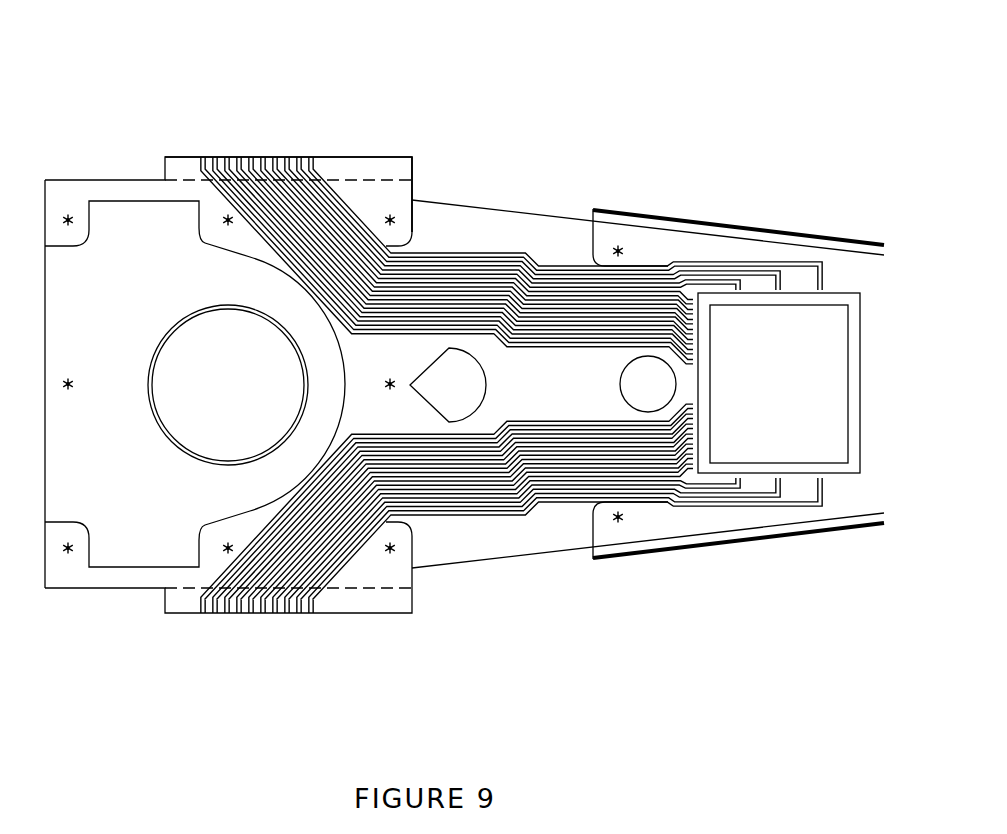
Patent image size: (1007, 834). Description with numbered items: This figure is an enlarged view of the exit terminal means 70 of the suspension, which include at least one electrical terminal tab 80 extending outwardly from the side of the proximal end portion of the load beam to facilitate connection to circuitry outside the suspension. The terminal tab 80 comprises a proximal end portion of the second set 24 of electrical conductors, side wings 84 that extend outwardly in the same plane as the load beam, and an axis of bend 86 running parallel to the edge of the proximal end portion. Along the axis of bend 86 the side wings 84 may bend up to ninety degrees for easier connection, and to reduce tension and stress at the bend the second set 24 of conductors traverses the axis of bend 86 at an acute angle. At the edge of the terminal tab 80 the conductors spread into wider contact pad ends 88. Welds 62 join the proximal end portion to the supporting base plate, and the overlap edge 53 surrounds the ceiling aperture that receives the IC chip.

The second set of electrical conductors 24 is at (556, 514).
The overlap edge 53 is at (853, 460).
The welds 62 is at (68, 210).
The exit terminal means 70 is at (345, 654).
The electrical terminal tab 80 is at (434, 593).
The side wings 84 is at (398, 164).
The axis of bend 86 is at (412, 180).
The contact pad ends 88 is at (250, 614).